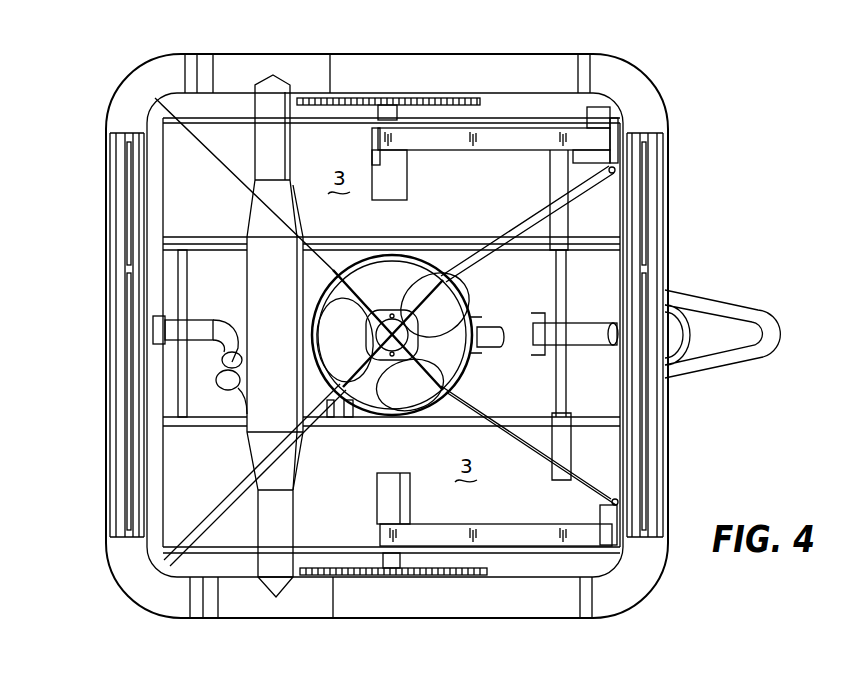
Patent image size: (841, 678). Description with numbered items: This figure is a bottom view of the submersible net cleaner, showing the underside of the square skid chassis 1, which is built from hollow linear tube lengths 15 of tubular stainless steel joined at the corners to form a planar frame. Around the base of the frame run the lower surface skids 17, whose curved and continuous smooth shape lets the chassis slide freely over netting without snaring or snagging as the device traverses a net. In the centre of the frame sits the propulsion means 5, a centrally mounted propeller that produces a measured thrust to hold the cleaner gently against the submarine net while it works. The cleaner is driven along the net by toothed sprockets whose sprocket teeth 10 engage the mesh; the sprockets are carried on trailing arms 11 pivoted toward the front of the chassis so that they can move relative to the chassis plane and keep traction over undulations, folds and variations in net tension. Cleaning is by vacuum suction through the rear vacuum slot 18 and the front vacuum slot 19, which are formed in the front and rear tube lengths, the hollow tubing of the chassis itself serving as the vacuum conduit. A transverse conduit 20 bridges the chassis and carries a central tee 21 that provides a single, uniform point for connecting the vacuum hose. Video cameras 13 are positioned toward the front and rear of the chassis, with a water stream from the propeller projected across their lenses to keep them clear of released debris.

The skid chassis 1 is at (688, 93).
The propulsion means 5 is at (408, 283).
The sprocket teeth 10 is at (445, 105).
The trailing arms 11 is at (505, 140).
The video camera 13 is at (158, 333).
The linear tube lengths 15 is at (378, 52).
The lower surface skids 17 is at (122, 163).
The rear vacuum slot 18 is at (128, 420).
The front vacuum slot 19 is at (645, 210).
The transverse conduit 20 is at (247, 301).
The central tee 21 is at (275, 283).